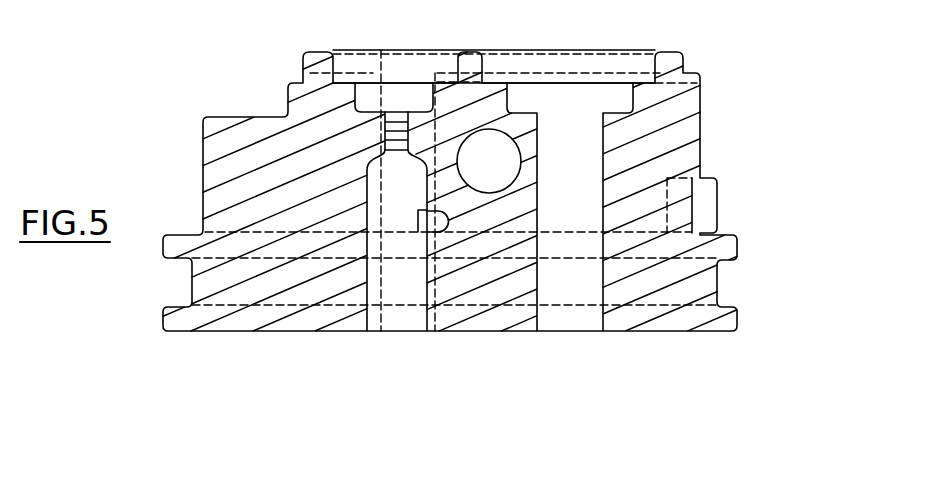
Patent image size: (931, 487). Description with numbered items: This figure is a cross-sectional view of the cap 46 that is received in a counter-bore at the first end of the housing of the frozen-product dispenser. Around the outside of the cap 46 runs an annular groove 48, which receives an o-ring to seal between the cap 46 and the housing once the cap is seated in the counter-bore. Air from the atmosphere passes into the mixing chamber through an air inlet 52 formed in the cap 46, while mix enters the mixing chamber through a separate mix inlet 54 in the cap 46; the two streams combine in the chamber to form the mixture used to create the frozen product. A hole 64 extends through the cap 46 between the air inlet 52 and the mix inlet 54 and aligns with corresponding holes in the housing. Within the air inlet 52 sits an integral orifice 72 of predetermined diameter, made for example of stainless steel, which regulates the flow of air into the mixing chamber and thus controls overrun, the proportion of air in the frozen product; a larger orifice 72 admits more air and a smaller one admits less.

The cap 46 is at (760, 106).
The annular groove 48 is at (716, 296).
The air inlet 52 is at (433, 108).
The mix inlet 54 is at (537, 153).
The hole 64 is at (519, 180).
The integral orifice 72 is at (383, 128).